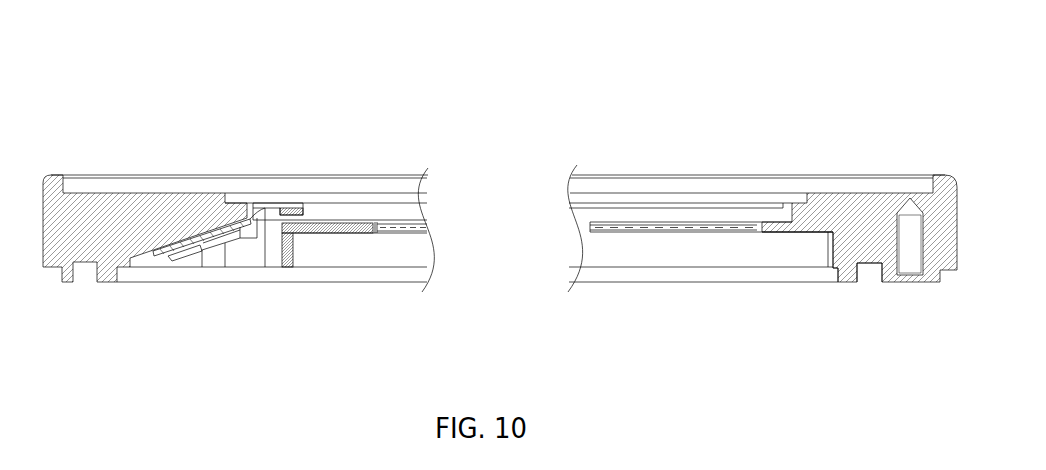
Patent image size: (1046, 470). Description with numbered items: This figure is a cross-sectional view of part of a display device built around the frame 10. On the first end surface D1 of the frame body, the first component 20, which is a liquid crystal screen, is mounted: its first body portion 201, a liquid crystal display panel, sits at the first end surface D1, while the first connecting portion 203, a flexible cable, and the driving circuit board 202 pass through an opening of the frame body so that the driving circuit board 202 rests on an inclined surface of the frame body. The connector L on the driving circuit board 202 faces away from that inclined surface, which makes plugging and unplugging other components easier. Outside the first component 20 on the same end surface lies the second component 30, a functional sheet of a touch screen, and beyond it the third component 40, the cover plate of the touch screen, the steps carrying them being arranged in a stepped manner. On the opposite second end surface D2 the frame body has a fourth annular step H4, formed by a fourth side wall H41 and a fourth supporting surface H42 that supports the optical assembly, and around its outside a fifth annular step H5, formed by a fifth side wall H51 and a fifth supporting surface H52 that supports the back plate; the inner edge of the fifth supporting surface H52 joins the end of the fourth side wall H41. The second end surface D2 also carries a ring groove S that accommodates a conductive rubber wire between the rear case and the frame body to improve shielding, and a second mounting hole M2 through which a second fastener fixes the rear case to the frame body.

The frame 10 is at (102, 228).
The third component 40 is at (238, 188).
The second component 30 is at (310, 198).
The first component 20 is at (317, 342).
The first body portion 201 is at (338, 210).
The driving circuit board 202 is at (210, 236).
The first connecting portion 203 is at (267, 207).
The connector L is at (177, 253).
The first end surface D1 is at (182, 155).
The second end surface D2 is at (118, 302).
The fourth annular step H4 is at (792, 320).
The fourth side wall H41 is at (827, 250).
The fourth supporting surface H42 is at (811, 232).
The fifth annular step H5 is at (867, 320).
The fifth side wall H51 is at (845, 268).
The fifth supporting surface H52 is at (837, 268).
The ring groove S is at (864, 270).
The second mounting hole M2 is at (904, 253).